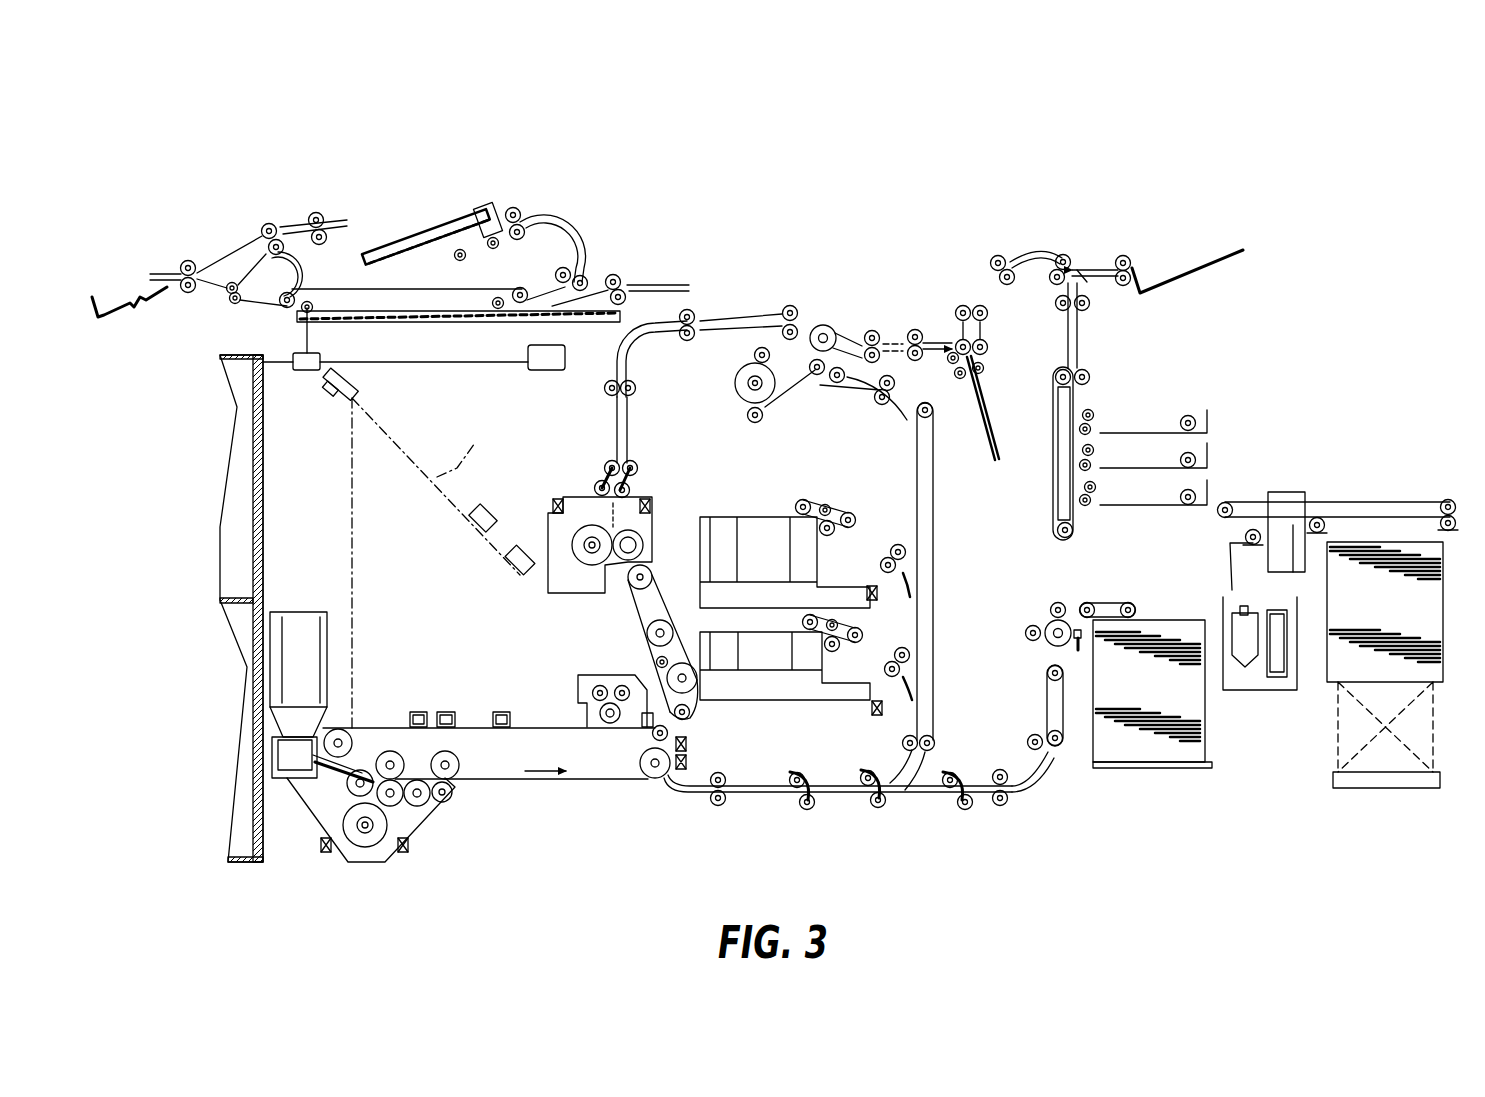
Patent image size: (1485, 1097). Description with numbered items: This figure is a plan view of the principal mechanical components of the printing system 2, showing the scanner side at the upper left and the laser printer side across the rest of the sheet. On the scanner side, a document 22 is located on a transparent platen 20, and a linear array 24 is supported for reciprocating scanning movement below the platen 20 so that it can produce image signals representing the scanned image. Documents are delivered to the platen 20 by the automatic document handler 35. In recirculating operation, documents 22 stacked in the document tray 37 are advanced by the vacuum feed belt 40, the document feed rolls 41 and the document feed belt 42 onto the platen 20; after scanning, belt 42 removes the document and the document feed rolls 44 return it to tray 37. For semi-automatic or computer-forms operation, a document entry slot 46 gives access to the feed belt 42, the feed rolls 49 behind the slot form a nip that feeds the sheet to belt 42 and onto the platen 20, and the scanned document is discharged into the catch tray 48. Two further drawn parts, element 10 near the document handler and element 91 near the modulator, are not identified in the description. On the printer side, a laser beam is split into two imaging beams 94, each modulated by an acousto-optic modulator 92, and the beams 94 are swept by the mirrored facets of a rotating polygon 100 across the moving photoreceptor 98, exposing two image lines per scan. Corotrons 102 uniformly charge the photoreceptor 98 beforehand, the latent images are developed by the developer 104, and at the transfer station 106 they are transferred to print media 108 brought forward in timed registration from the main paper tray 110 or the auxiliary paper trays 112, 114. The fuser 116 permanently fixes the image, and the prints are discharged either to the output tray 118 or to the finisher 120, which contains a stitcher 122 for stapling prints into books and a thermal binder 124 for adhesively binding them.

The web processing system 2 is at (802, 232).
The web supply and feed section 10 is at (216, 243).
The transparent platen 20 is at (453, 322).
The document 22 is at (405, 258).
The linear array 24 is at (297, 352).
The automatic document handler 35 is at (424, 218).
The document tray 37 is at (408, 263).
The vacuum feed belt 40 is at (500, 247).
The document feed rolls 41 is at (520, 222).
The document feed belt 42 is at (463, 290).
The document feed rolls 44 is at (287, 254).
The document entry slot 46 is at (648, 277).
The catch tray 48 is at (150, 293).
The feed rolls 49 is at (612, 276).
The sensor 91 is at (522, 577).
The acousto-optic modulator 92 is at (490, 505).
The imaging beams 94 is at (465, 447).
The photoreceptor 98 is at (535, 720).
The rotating polygon 100 is at (343, 398).
The corotrons 102 is at (500, 712).
The developer 104 is at (432, 817).
The transfer station 106 is at (660, 799).
The print media 108 is at (1207, 720).
The main paper tray 110 is at (1132, 767).
The auxiliary paper tray 112 is at (755, 700).
The auxiliary paper tray 114 is at (758, 510).
The fuser 116 is at (663, 522).
The output tray 118 is at (1225, 263).
The finisher 120 is at (1262, 428).
The stitcher 122 is at (1203, 443).
The thermal binder 124 is at (1364, 486).